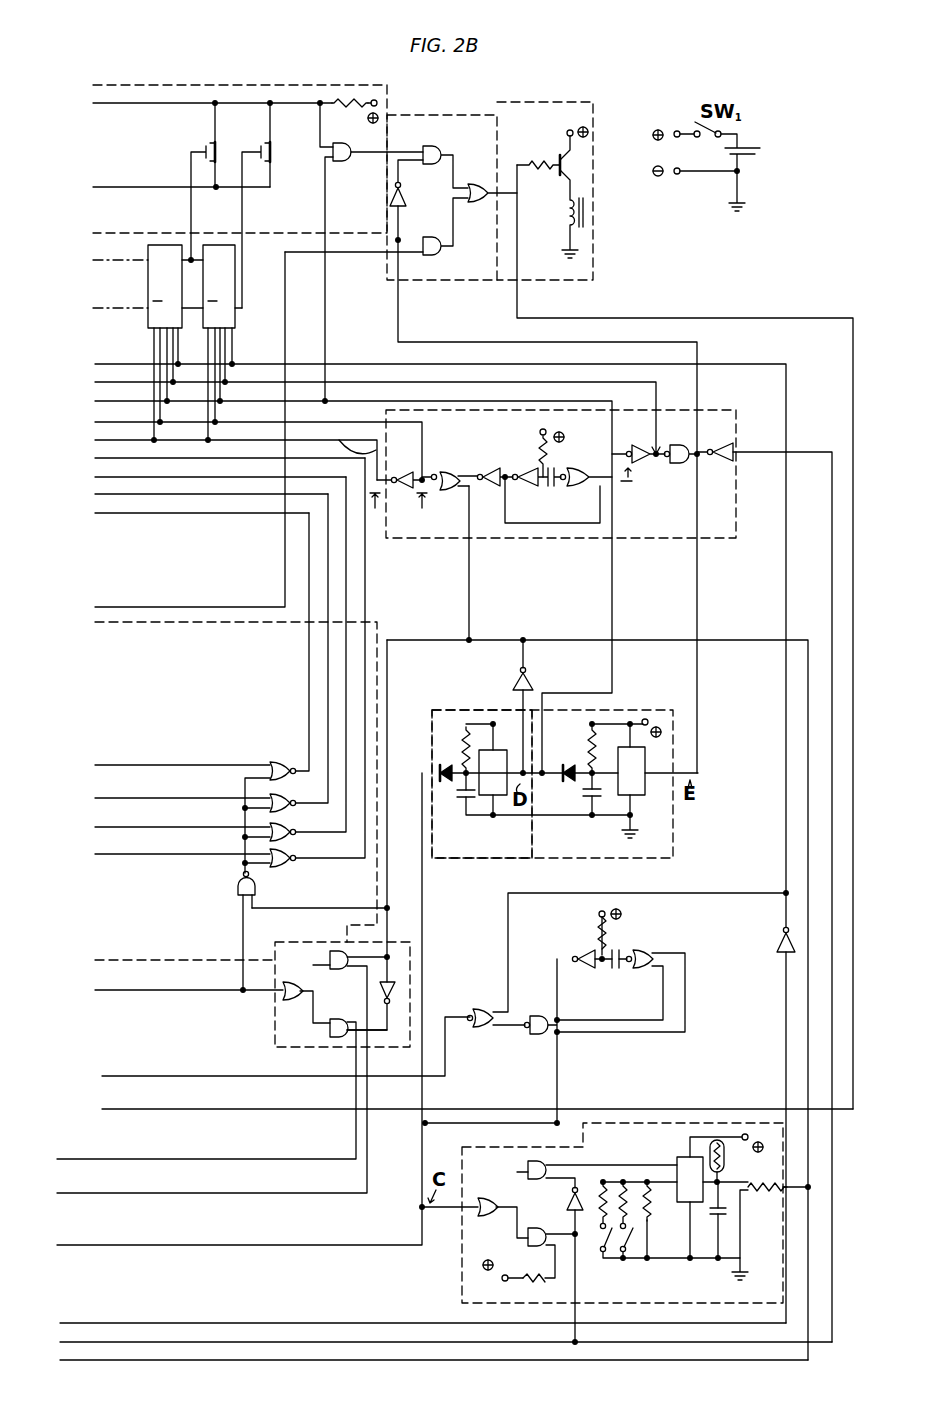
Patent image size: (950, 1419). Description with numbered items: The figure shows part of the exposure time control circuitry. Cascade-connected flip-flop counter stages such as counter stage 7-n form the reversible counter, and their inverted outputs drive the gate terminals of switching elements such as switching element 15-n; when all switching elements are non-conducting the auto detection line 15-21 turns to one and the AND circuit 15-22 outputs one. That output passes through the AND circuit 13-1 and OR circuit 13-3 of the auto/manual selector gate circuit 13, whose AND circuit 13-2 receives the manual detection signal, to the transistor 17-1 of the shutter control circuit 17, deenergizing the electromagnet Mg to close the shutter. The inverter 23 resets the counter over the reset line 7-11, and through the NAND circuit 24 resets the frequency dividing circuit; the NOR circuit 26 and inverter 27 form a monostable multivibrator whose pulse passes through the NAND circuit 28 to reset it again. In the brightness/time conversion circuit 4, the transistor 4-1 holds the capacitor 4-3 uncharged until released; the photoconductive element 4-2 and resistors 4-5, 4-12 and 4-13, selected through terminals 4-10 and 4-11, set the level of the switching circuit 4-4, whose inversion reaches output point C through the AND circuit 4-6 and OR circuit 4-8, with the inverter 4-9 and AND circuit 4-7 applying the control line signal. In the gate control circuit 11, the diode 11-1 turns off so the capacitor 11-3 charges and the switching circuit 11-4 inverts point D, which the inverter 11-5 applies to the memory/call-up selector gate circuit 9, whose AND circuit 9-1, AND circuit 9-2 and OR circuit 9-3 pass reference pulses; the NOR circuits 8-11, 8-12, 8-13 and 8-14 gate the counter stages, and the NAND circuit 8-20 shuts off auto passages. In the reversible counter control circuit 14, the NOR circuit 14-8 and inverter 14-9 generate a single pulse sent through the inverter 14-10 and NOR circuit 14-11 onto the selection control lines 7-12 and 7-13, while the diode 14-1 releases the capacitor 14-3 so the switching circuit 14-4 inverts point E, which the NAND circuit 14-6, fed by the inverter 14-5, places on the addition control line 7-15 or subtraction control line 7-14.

The auto detection line 15-21 is at (296, 100).
The switching element 15-n is at (268, 155).
The AND circuit 15-22 is at (346, 162).
The flip-flop counter stage 7-n is at (219, 286).
The reset line 7-11 is at (340, 348).
The selection control line 7-12 is at (424, 432).
The selection control line 7-13 is at (403, 463).
The subtraction control line 7-14 is at (636, 432).
The addition control line 7-15 is at (660, 392).
The auto/manual selector gate circuit 13 is at (430, 283).
The AND circuit 13-1 is at (430, 147).
The AND circuit 13-2 is at (432, 228).
The OR circuit 13-3 is at (479, 185).
The shutter control circuit 17 is at (599, 100).
The transistor 17-1 is at (553, 176).
The reversible counter control circuit 14 is at (648, 536).
The diode 14-1 is at (566, 786).
The capacitor 14-3 is at (598, 805).
The switching circuit 14-4 is at (640, 795).
The inverter 14-5 is at (722, 463).
The NAND circuit 14-6 is at (680, 463).
The NOR circuit 14-8 is at (583, 468).
The inverter 14-9 is at (528, 492).
The inverter 14-10 is at (490, 460).
The NOR circuit 14-11 is at (448, 492).
The gate control circuit 11 is at (465, 860).
The diode 11-1 is at (450, 790).
The capacitor 11-3 is at (470, 800).
The switching circuit 11-4 is at (490, 760).
The inverter 11-5 is at (528, 670).
The NOR circuit 8-11 is at (290, 866).
The NOR circuit 8-12 is at (290, 840).
The NOR circuit 8-13 is at (290, 811).
The NOR circuit 8-14 is at (285, 756).
The NAND circuit 8-20 is at (236, 890).
The memory/call-up selector gate circuit 9 is at (272, 1014).
The AND circuit 9-1 is at (338, 969).
The AND circuit 9-2 is at (328, 1034).
The OR circuit 9-3 is at (292, 986).
The inverter 23 is at (776, 942).
The NAND circuit 24 is at (478, 1004).
The NOR circuit 26 is at (632, 956).
The inverter 27 is at (585, 950).
The NAND circuit 28 is at (538, 1034).
The brightness/time conversion circuit 4 is at (462, 1150).
The transistor 4-1 is at (742, 1196).
The photoconductive element 4-2 is at (724, 1162).
The capacitor 4-3 is at (713, 1230).
The switching circuit 4-4 is at (693, 1179).
The resistor 4-5 is at (653, 1228).
The AND circuit 4-6 is at (528, 1165).
The AND circuit 4-7 is at (530, 1233).
The OR circuit 4-8 is at (486, 1218).
The inverter 4-9 is at (567, 1196).
The terminal 4-10 is at (640, 1260).
The terminal 4-11 is at (596, 1258).
The resistor 4-12 is at (647, 1180).
The resistor 4-13 is at (603, 1180).